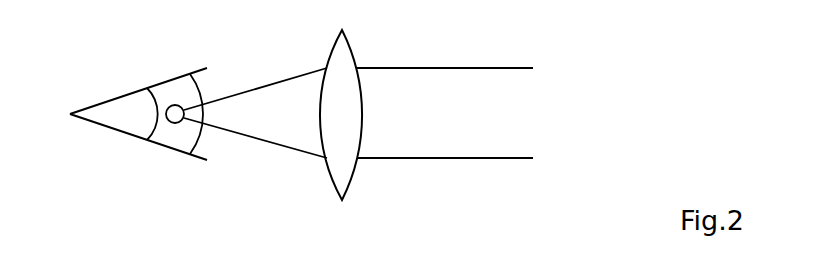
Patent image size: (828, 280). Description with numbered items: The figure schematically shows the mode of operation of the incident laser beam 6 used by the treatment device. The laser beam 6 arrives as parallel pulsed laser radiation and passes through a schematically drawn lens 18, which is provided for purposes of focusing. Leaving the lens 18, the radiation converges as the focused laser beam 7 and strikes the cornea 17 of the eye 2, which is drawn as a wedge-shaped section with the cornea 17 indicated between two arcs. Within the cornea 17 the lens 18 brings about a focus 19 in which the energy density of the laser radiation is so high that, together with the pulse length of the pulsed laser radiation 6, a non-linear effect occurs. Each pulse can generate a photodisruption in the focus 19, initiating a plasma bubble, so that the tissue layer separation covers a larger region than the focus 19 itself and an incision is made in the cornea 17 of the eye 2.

The eye 2 is at (128, 105).
The cornea 17 is at (182, 138).
The focus 19 is at (175, 121).
The focused laser beam 7 is at (302, 153).
The lens 18 is at (343, 180).
The laser beam 6 is at (483, 159).